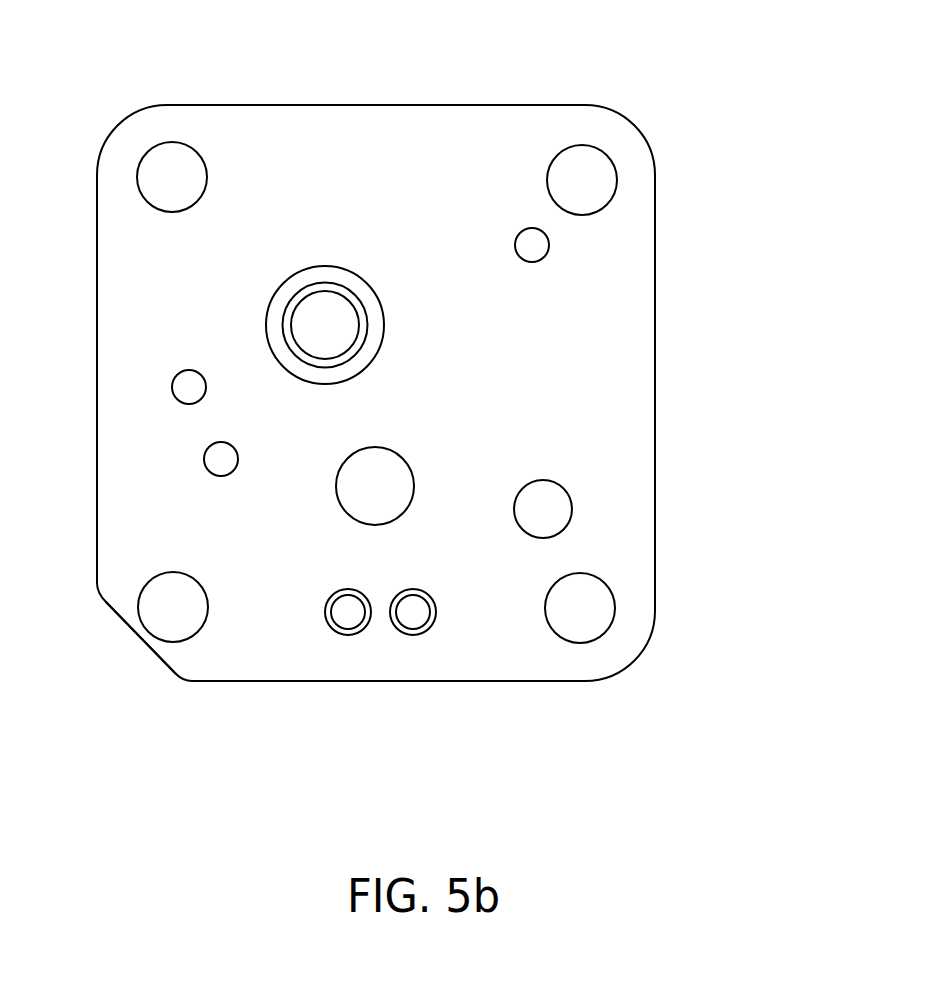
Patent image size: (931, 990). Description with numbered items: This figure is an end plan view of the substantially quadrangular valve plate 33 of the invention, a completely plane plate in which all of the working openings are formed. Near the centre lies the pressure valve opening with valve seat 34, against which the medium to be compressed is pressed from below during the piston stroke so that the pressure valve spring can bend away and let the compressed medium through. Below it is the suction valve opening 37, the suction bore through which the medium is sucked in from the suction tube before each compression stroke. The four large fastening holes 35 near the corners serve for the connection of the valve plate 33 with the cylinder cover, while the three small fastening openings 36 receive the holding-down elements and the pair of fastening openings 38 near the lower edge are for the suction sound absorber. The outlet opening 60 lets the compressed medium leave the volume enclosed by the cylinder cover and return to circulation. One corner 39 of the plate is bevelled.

The valve plate 33 is at (663, 173).
The pressure valve opening with valve seat 34 is at (355, 325).
The fastening holes 35 is at (172, 183).
The fastening openings for the holding-down elements 36 is at (532, 245).
The suction valve opening 37 is at (388, 483).
The fastening openings for the suction sound absorber 38 is at (418, 612).
The bevelled corner 39 is at (122, 622).
The outlet opening 60 is at (545, 508).